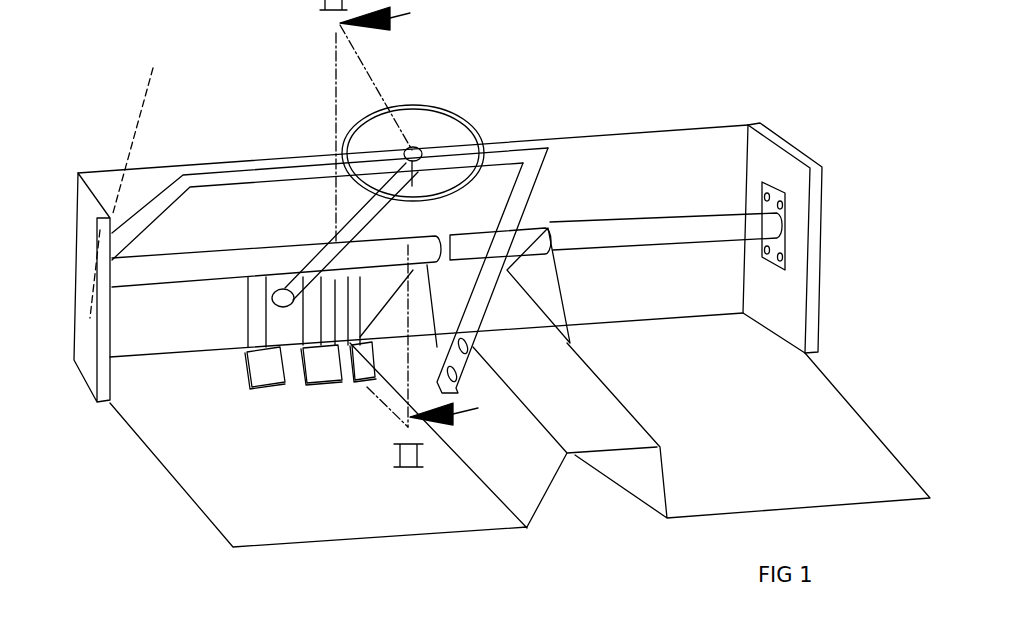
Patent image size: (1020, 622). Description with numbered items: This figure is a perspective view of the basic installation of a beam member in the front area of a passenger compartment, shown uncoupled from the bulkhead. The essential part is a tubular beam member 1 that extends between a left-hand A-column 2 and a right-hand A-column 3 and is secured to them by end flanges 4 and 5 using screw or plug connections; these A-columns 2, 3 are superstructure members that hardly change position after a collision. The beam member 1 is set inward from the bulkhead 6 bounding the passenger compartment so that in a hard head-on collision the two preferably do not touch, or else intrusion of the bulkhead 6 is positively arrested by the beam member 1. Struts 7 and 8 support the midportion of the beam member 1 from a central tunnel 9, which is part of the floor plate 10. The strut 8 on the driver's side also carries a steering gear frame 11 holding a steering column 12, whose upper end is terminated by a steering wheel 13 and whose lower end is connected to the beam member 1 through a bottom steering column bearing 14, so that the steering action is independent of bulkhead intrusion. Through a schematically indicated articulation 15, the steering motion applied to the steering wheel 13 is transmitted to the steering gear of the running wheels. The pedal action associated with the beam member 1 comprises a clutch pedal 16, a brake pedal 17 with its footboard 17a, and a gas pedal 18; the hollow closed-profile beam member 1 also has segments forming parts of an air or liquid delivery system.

The tubular beam member 1 is at (662, 235).
The left-hand A-column 2 is at (83, 215).
The right-hand A-column 3 is at (778, 167).
The end flange 4 is at (779, 222).
The end flange 5 is at (126, 181).
The bulkhead 6 is at (620, 182).
The strut 7 is at (552, 290).
The strut 8 is at (448, 315).
The central tunnel 9 is at (583, 435).
The floor plate 10 is at (203, 518).
The steering gear frame 11 is at (243, 178).
The steering column 12 is at (390, 180).
The steering wheel 13 is at (458, 118).
The bottom steering column bearing 14 is at (276, 294).
The articulation 15 is at (282, 276).
The clutch pedal 16 is at (265, 367).
The brake pedal 17 is at (312, 303).
The footboard 17a is at (320, 358).
The gas pedal 18 is at (363, 360).